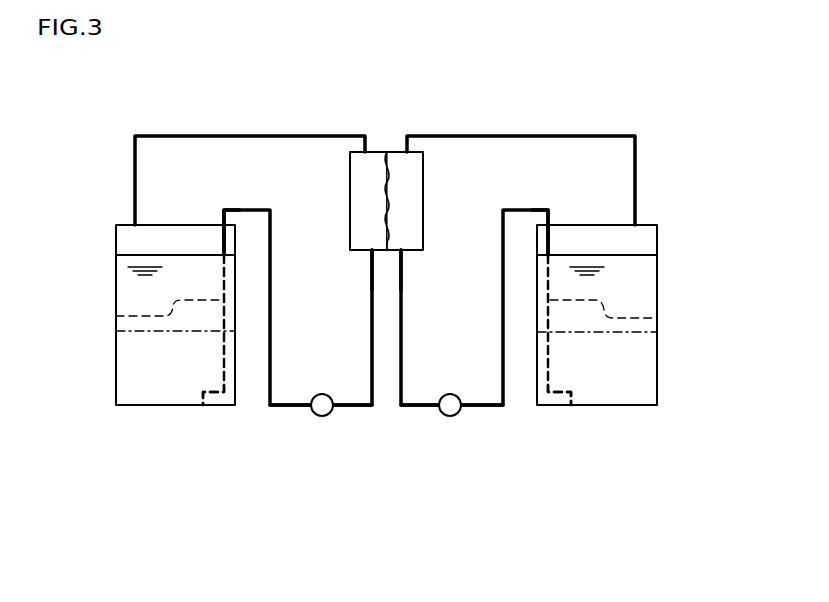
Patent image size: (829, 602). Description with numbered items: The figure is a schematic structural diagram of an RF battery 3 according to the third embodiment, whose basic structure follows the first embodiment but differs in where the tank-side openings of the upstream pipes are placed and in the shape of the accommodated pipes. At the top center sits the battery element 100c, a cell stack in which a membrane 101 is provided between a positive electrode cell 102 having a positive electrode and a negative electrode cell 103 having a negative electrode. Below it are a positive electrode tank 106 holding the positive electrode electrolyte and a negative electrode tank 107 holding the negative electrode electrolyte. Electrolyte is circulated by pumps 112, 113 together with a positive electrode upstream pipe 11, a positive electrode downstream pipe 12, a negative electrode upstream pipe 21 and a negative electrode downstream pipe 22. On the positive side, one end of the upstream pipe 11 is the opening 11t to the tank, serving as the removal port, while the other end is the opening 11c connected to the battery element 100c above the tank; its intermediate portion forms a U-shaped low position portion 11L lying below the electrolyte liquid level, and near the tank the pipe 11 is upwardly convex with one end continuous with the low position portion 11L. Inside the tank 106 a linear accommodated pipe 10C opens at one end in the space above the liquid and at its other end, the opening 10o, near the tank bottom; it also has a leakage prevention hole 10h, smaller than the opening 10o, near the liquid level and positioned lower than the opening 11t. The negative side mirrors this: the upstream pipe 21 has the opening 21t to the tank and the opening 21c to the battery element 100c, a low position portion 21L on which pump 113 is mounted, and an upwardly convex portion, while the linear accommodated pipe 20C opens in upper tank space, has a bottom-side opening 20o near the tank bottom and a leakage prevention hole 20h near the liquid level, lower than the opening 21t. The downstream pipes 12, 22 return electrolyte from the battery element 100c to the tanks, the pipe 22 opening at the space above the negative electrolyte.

The RF battery 3 is at (655, 207).
The accommodated pipe 10C is at (116, 316).
The leakage prevention hole 10h is at (224, 270).
The opening 10o is at (203, 405).
The positive electrode upstream pipe 11 is at (267, 358).
The opening to battery element 11c is at (363, 267).
The low position portion 11L is at (298, 408).
The opening to positive electrode tank 11t is at (222, 218).
The positive electrode downstream pipe 12 is at (230, 136).
The accommodated pipe 20C is at (657, 318).
The leakage prevention hole 20h is at (548, 270).
The opening 20o is at (571, 405).
The negative electrode upstream pipe 21 is at (505, 358).
The opening to battery element 21c is at (410, 267).
The low position portion 21L is at (490, 408).
The opening to negative electrode tank 21t is at (551, 221).
The negative electrode downstream pipe 22 is at (517, 136).
The battery element 100c is at (412, 76).
The membrane 101 is at (388, 160).
The positive electrode cell 102 is at (362, 160).
The negative electrode cell 103 is at (410, 160).
The positive electrode tank 106 is at (115, 350).
The negative electrode tank 107 is at (658, 352).
The pump 112 is at (331, 413).
The pump 113 is at (441, 413).